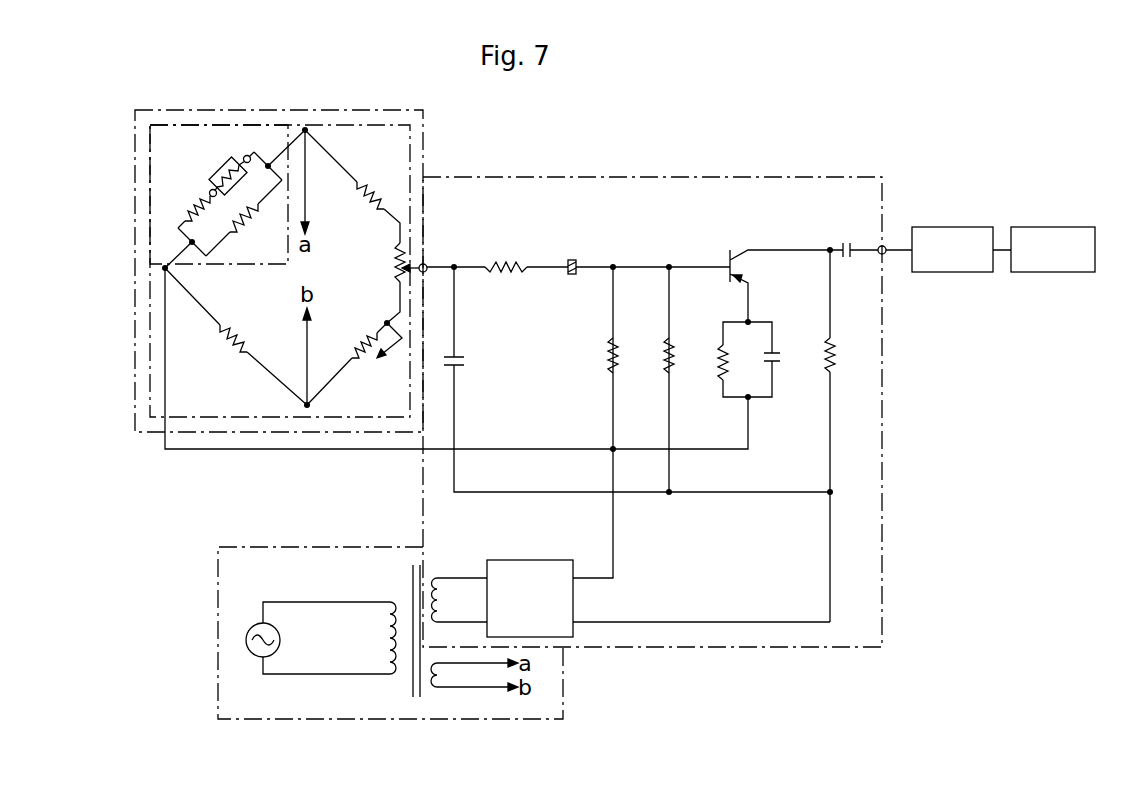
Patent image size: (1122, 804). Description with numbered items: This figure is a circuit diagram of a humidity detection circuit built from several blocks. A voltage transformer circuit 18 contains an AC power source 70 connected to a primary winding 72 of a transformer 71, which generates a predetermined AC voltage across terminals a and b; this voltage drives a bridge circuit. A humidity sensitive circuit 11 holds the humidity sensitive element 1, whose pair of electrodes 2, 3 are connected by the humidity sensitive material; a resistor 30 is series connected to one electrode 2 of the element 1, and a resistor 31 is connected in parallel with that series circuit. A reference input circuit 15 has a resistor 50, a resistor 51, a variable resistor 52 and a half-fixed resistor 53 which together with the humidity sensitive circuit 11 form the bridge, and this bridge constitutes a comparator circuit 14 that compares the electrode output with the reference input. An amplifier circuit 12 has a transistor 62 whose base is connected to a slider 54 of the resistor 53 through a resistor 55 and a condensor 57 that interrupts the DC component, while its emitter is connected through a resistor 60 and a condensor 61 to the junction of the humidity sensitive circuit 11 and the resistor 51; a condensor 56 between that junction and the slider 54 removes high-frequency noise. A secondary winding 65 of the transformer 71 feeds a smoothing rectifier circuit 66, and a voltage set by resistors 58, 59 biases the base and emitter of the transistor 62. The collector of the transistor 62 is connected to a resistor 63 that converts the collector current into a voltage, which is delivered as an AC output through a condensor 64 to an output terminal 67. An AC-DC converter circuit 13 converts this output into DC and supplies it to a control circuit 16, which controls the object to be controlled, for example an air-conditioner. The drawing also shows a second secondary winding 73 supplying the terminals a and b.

The humidity sensitive element 1 is at (214, 178).
The electrode 2 is at (210, 190).
The electrode 3 is at (245, 156).
The humidity sensitive circuit 11 is at (268, 125).
The amplifier circuit 12 is at (578, 177).
The AC-DC converter circuit 13 is at (950, 227).
The comparator circuit 14 is at (185, 110).
The reference input circuit 15 is at (372, 125).
The control circuit 16 is at (1050, 227).
The voltage transformer circuit 18 is at (272, 547).
The resistor 30 is at (190, 215).
The resistor 31 is at (246, 222).
The resistor 50 is at (375, 196).
The resistor 51 is at (242, 338).
The variable resistor 52 is at (372, 340).
The half-fixed resistor 53 is at (398, 266).
The slider 54 is at (427, 265).
The resistor 55 is at (508, 265).
The condensor 56 is at (462, 359).
The condensor 57 is at (577, 264).
The resistor 58 is at (610, 350).
The resistor 59 is at (666, 350).
The resistor 60 is at (720, 355).
The condensor 61 is at (775, 355).
The transistor 62 is at (732, 253).
The resistor 63 is at (834, 351).
The condensor 64 is at (842, 245).
The secondary winding 65 is at (440, 578).
The smoothing rectifier circuit 66 is at (525, 560).
The output terminal 67 is at (878, 247).
The AC power source 70 is at (258, 625).
The transformer 71 is at (413, 565).
The primary winding 72 is at (390, 605).
The secondary winding 73 is at (440, 690).